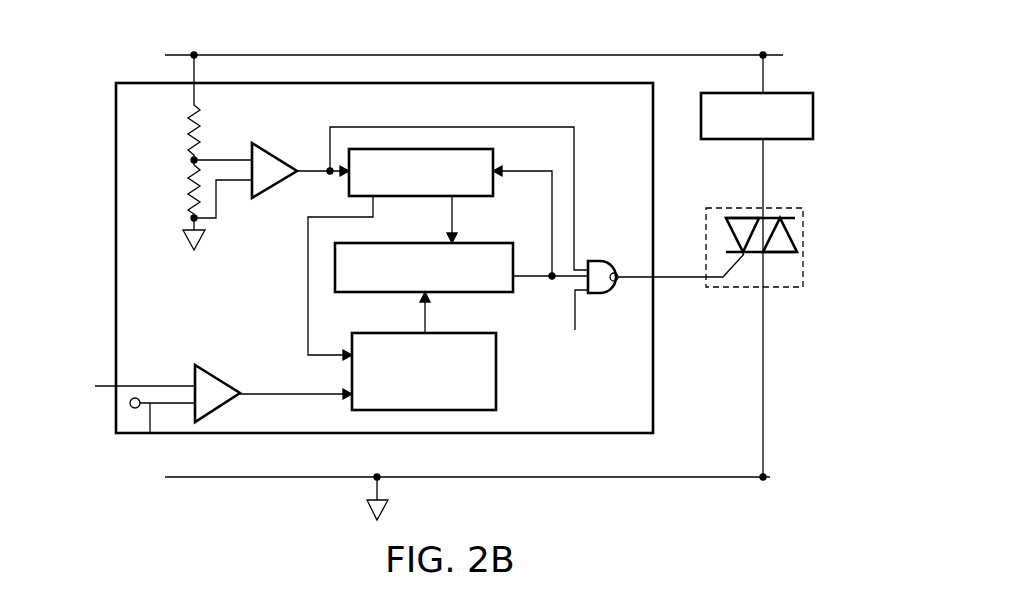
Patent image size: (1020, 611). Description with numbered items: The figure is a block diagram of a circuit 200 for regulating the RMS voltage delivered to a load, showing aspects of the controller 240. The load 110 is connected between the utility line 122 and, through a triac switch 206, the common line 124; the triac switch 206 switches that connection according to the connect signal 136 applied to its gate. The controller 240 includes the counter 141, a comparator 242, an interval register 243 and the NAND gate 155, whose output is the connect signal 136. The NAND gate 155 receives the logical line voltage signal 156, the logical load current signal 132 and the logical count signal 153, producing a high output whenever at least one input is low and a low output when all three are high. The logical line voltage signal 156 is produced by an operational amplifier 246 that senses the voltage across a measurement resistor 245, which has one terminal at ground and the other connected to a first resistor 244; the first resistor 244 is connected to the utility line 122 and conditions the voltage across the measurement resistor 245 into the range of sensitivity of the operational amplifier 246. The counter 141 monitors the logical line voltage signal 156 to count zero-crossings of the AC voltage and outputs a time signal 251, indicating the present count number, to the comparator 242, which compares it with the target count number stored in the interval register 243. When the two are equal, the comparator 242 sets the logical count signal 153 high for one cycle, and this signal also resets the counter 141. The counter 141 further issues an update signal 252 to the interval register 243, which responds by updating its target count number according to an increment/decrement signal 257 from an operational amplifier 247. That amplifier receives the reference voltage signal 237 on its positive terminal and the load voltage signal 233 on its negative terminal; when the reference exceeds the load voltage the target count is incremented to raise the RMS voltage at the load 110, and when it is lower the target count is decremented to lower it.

The circuit 200 is at (118, 52).
The controller 240 is at (116, 108).
The first resistor 244 is at (180, 118).
The measurement resistor 245 is at (180, 182).
The operational amplifier 246 is at (285, 125).
The logical line voltage signal 156 is at (302, 173).
The counter 141 is at (480, 196).
The time signal 251 is at (450, 203).
The comparator 242 is at (448, 292).
The update signal 252 is at (308, 295).
The interval register 243 is at (453, 410).
The logical count signal 153 is at (527, 277).
The NAND gate 155 is at (612, 286).
The logical load current signal 132 is at (575, 323).
The connect signal 136 is at (672, 275).
The reference voltage signal 237 is at (108, 386).
The load voltage signal 233 is at (148, 437).
The operational amplifier 247 is at (216, 422).
The increment/decrement signal 257 is at (297, 394).
The load 110 is at (813, 112).
The triac switch 206 is at (803, 230).
The utility line 122 is at (630, 55).
The common line 124 is at (653, 477).